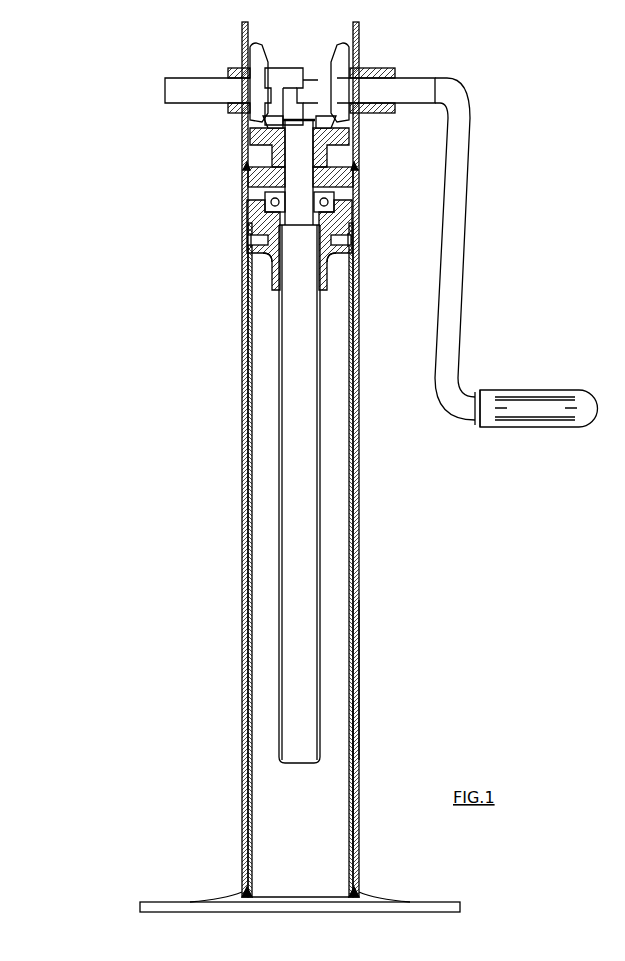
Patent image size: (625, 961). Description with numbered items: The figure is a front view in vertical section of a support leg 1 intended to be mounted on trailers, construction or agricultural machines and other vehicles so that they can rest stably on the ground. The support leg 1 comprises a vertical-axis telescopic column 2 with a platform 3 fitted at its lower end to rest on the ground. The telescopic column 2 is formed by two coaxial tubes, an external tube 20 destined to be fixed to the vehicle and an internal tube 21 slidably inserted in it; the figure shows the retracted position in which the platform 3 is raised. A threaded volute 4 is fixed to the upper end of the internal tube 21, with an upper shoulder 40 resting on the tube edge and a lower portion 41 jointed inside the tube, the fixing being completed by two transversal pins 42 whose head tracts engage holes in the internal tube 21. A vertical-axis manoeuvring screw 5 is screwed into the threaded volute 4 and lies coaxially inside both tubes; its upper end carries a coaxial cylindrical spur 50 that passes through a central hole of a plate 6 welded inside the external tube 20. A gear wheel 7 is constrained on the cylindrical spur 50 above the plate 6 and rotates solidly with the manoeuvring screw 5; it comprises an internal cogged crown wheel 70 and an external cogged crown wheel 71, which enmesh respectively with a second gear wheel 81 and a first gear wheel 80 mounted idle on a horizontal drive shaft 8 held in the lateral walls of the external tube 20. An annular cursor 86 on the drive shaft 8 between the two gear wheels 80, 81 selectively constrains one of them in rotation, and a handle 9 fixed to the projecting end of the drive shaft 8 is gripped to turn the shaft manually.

The support leg 1 is at (124, 70).
The telescopic column 2 is at (363, 548).
The external tube 20 is at (360, 738).
The internal tube 21 is at (348, 798).
The platform 3 is at (173, 902).
The threaded volute 4 is at (266, 268).
The upper shoulder 40 is at (350, 210).
The lower portion 41 is at (337, 253).
The transversal pin 42 is at (255, 240).
The manoeuvring screw 5 is at (300, 595).
The cylindrical spur 50 is at (303, 177).
The plate 6 is at (244, 168).
The gear wheel 7 is at (270, 152).
The internal cogged crown wheel 70 is at (260, 120).
The external cogged crown wheel 71 is at (347, 123).
The drive shaft 8 is at (413, 85).
The first gear wheel 80 is at (330, 44).
The second gear wheel 81 is at (250, 47).
The annular cursor 86 is at (283, 73).
The handle 9 is at (453, 287).